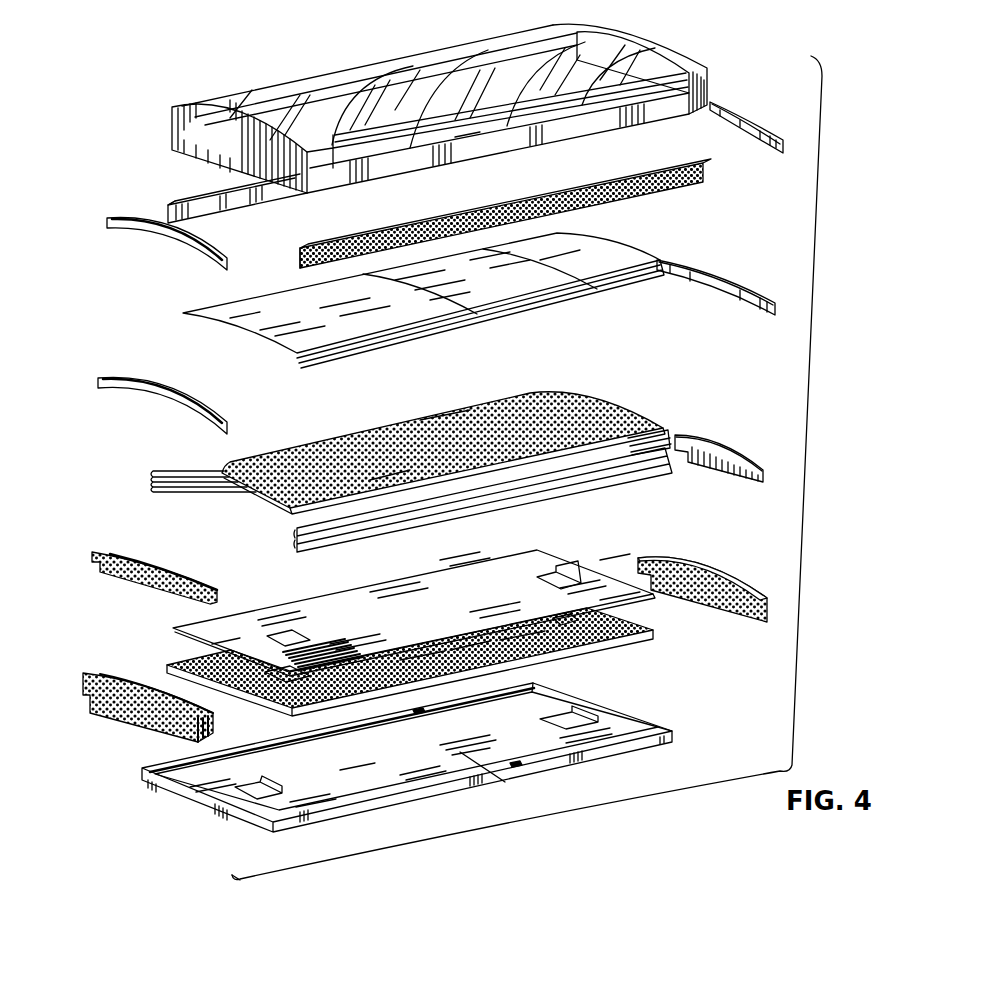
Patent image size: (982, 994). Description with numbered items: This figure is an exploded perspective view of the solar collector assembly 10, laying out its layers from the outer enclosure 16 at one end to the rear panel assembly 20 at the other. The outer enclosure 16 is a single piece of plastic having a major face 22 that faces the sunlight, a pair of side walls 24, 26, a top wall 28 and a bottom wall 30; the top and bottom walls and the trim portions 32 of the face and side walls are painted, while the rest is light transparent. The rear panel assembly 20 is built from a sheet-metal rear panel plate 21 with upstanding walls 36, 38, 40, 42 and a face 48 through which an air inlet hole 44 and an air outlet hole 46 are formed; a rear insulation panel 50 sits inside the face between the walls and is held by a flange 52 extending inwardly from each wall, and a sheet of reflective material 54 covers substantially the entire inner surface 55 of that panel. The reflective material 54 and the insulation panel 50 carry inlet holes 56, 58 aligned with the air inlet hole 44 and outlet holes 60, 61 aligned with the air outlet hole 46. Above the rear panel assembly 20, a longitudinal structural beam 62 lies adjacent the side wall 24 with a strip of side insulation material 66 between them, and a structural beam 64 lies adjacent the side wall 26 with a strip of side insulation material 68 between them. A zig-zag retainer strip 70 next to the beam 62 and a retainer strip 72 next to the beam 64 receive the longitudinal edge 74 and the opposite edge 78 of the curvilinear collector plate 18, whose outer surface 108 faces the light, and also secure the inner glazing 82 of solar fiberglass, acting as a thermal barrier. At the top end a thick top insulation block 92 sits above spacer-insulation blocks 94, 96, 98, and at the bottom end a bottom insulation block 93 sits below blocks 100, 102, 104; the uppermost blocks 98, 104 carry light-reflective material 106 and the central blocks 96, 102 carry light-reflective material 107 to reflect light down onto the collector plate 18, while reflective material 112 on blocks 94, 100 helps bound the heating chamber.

The solar collector assembly 10 is at (133, 843).
The outer enclosure 16 is at (431, 101).
The collector plate 18 is at (443, 465).
The rear panel assembly 20 is at (407, 768).
The rear panel plate 21 is at (401, 767).
The major face 22 is at (437, 70).
The side wall 24 is at (573, 107).
The side wall 26 is at (260, 97).
The top wall 28 is at (653, 43).
The bottom wall 30 is at (210, 148).
The trim portions 32 is at (476, 150).
The upstanding wall 36 is at (418, 793).
The upstanding wall 38 is at (280, 738).
The upstanding wall 40 is at (240, 810).
The upstanding wall 42 is at (617, 715).
The air inlet hole 44 is at (257, 787).
The air outlet hole 46 is at (545, 722).
The face 48 is at (462, 753).
The rear insulation panel 50 is at (419, 662).
The flange 52 is at (420, 716).
The sheet of reflective material 54 is at (540, 557).
The inner surface 55 is at (455, 658).
The inlet hole 56 is at (303, 633).
The inlet hole 58 is at (312, 678).
The air outlet hole 60 is at (541, 578).
The air outlet hole 61 is at (577, 620).
The structural beam 62 is at (313, 248).
The structural beam 64 is at (228, 207).
The strip of side insulation material 66 is at (299, 266).
The strip of side insulation material 68 is at (165, 212).
The retainer strip 70 is at (335, 542).
The retainer strip 72 is at (170, 497).
The longitudinal edge 74 is at (388, 475).
The longitudinal edge 78 is at (325, 440).
The inner glazing 82 is at (458, 312).
The top insulation block 92 is at (720, 572).
The bottom insulation block 93 is at (148, 723).
The spacer-insulation block 94 is at (713, 450).
The spacer-insulation block 96 is at (723, 272).
The spacer-insulation block 98 is at (750, 120).
The spacer-insulation block 100 is at (170, 588).
The spacer-insulation block 102 is at (190, 400).
The spacer-insulation block 104 is at (181, 240).
The light-reflective material 106 is at (730, 112).
The light-reflective material 107 is at (693, 267).
The outer surface 108 is at (433, 413).
The reflective material 112 is at (693, 440).